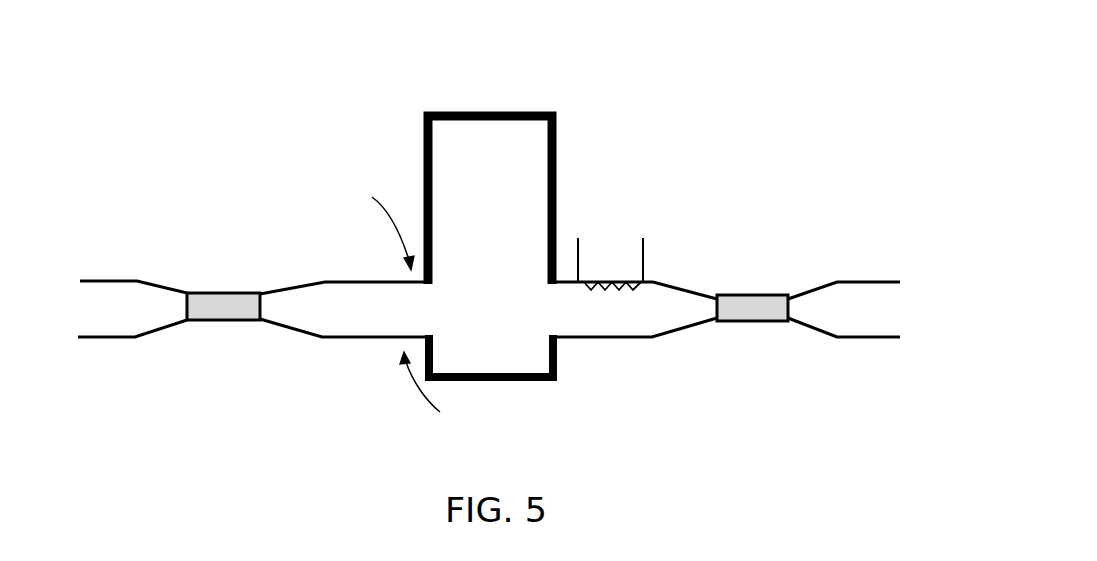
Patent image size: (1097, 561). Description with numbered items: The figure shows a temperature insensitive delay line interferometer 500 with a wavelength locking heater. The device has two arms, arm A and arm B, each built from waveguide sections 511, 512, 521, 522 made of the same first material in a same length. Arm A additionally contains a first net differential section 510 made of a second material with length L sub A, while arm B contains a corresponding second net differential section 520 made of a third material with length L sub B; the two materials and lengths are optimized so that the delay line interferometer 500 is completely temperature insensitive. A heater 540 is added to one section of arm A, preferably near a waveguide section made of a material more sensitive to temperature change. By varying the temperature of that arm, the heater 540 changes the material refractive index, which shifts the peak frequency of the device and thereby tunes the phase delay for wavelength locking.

The temperature insensitive delay line interferometer 500 is at (633, 46).
The first net differential section 510 is at (601, 145).
The second net differential section 520 is at (557, 378).
The waveguide section 511 is at (364, 251).
The waveguide section 521 is at (323, 340).
The waveguide section 512 is at (652, 278).
The waveguide section 522 is at (651, 336).
The heater 540 is at (578, 253).